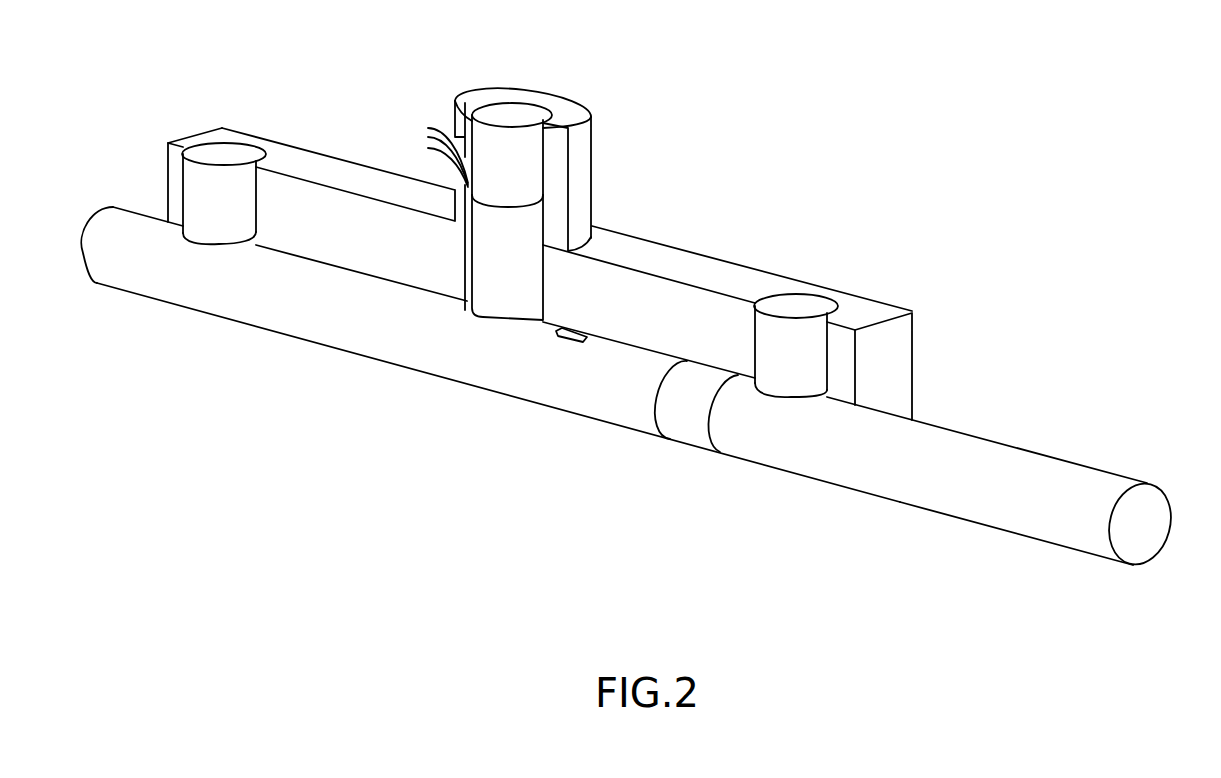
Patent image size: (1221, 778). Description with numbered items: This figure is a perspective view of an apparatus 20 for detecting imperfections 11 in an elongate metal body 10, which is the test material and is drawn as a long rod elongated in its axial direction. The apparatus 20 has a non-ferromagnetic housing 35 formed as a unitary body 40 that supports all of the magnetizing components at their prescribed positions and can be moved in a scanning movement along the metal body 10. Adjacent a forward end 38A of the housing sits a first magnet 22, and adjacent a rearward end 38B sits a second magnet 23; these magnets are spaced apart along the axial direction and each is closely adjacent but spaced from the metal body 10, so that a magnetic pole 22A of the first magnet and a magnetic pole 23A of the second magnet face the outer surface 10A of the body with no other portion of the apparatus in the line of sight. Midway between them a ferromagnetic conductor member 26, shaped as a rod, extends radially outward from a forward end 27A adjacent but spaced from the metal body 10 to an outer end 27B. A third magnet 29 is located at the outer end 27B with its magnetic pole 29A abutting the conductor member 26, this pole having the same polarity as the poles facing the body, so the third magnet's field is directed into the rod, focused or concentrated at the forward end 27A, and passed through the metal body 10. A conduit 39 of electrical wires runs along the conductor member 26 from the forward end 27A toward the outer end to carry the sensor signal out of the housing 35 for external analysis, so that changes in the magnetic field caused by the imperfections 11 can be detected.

The elongate metal body 10 is at (1068, 546).
The outer surface of the metal body 10A is at (965, 503).
The imperfections 11 is at (577, 340).
The apparatus 20 is at (556, 250).
The first magnet 22 is at (231, 152).
The magnetic pole of first magnet 22A is at (208, 243).
The second magnet 23 is at (810, 308).
The magnetic pole of second magnet 23A is at (797, 396).
The conductor member 26 is at (545, 273).
The forward end of the conductor member 27A is at (493, 306).
The outer end of the conductor member 27B is at (495, 201).
The third magnet 29 is at (482, 107).
The magnetic pole of third magnet 29A is at (515, 163).
The housing 35 is at (713, 258).
The forward end of the housing 38A is at (187, 138).
The rearward end of the housing 38B is at (914, 360).
The conduit of electrical wires 39 is at (438, 127).
The unitary body 40 is at (333, 168).